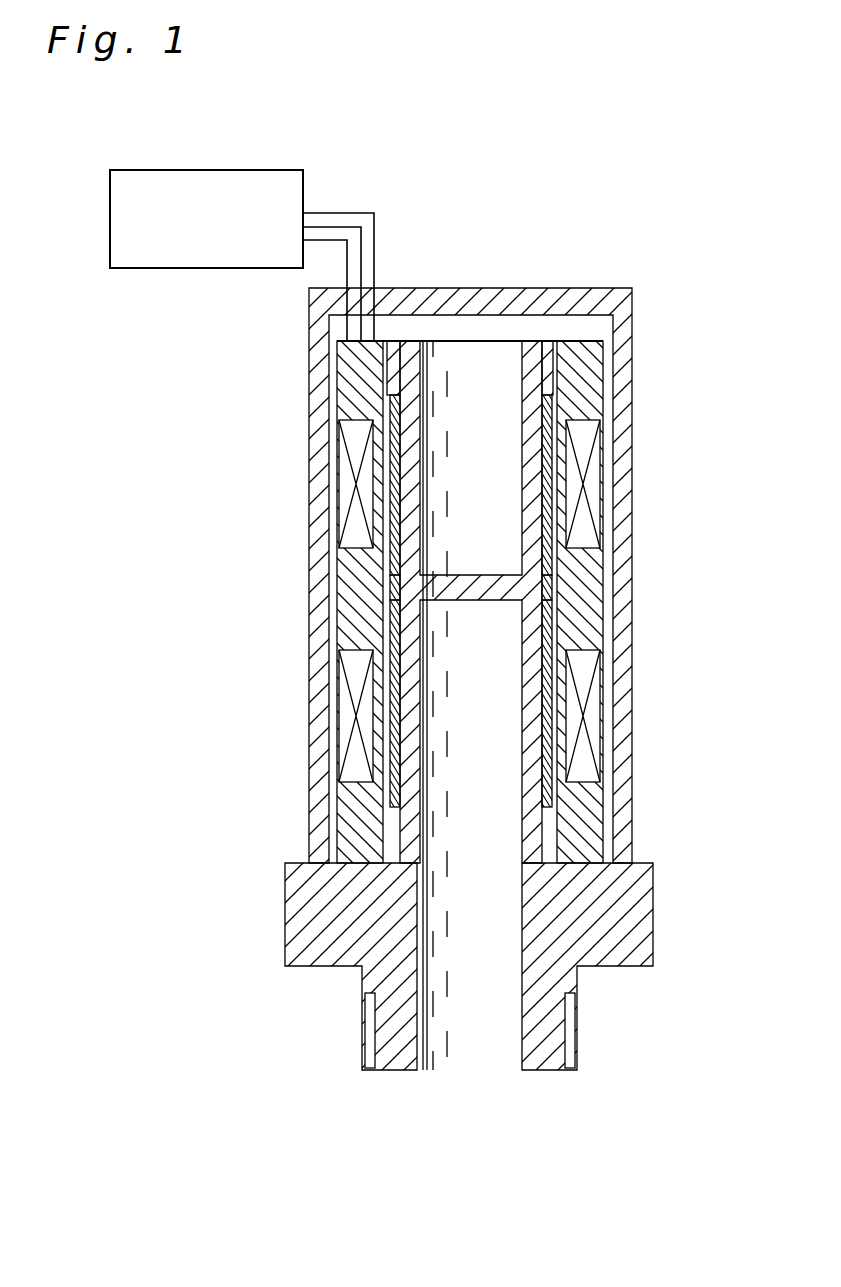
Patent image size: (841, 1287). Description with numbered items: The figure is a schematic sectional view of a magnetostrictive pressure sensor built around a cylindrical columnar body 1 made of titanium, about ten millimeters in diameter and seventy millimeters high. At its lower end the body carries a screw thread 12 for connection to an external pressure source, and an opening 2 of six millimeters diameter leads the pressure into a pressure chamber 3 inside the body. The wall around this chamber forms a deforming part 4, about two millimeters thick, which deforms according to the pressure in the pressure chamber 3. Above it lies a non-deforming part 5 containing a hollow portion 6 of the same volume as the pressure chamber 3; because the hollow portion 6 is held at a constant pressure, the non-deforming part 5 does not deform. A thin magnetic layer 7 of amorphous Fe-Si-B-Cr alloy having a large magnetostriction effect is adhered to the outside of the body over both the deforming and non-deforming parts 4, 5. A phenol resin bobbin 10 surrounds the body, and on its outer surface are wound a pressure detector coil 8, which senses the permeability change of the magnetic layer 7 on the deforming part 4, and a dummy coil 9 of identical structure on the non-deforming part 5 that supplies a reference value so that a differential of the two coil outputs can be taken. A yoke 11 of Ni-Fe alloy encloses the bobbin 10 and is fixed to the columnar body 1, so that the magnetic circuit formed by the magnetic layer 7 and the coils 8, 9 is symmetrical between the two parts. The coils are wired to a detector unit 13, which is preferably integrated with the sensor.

The cylindrical columnar body 1 is at (653, 930).
The opening 2 is at (447, 1042).
The pressure chamber 3 is at (443, 813).
The deforming part 4 is at (528, 798).
The non-deforming part 5 is at (549, 418).
The hollow portion 6 is at (443, 402).
The magnetic layer 7 is at (543, 609).
The pressure detector coil 8 is at (600, 718).
The dummy coil 9 is at (597, 478).
The bobbin 10 is at (592, 364).
The yoke 11 is at (585, 289).
The screw thread 12 is at (577, 1040).
The detector unit 13 is at (192, 270).